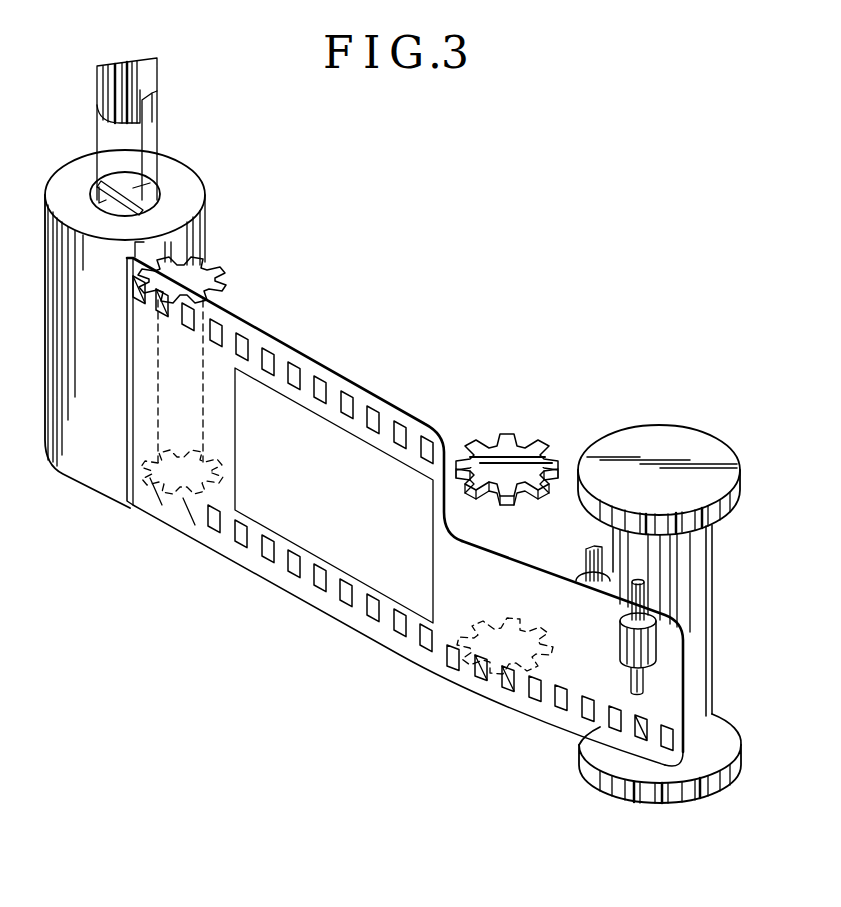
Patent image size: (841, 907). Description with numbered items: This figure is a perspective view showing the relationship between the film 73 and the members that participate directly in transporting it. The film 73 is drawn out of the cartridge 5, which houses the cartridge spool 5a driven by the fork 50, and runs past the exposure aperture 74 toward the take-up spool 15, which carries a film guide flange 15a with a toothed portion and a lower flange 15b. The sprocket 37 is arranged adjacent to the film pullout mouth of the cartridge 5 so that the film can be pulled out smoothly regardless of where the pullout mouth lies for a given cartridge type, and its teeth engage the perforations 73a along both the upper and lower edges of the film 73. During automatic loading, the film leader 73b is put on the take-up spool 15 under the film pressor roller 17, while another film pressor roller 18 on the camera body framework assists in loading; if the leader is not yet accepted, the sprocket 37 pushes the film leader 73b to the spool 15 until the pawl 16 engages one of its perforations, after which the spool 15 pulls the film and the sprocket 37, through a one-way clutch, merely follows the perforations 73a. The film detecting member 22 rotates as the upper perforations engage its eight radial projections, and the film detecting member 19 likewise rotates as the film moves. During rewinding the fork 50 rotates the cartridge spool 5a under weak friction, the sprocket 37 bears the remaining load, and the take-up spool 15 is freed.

The cartridge 5 is at (85, 472).
The cartridge spool 5a is at (160, 187).
The fork 50 is at (150, 78).
The sprocket 37 is at (212, 271).
The film 73 is at (218, 360).
The perforations 73a is at (246, 344).
The film leader 73b is at (497, 577).
The exposure aperture 74 is at (332, 424).
The film detecting member 22 is at (505, 449).
The film detecting member 19 is at (497, 633).
The film pressor roller 18 is at (578, 576).
The film pressor roller 17 is at (640, 644).
The pawl 16 is at (638, 738).
The take-up spool 15 is at (700, 603).
The film guide flange 15a is at (722, 517).
The lower reel flange 15b is at (712, 790).